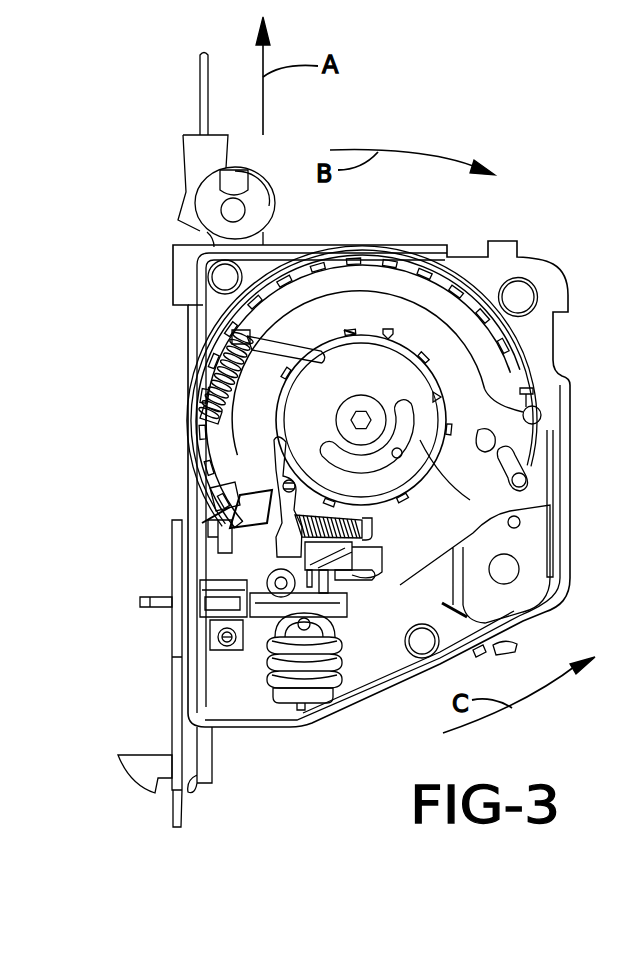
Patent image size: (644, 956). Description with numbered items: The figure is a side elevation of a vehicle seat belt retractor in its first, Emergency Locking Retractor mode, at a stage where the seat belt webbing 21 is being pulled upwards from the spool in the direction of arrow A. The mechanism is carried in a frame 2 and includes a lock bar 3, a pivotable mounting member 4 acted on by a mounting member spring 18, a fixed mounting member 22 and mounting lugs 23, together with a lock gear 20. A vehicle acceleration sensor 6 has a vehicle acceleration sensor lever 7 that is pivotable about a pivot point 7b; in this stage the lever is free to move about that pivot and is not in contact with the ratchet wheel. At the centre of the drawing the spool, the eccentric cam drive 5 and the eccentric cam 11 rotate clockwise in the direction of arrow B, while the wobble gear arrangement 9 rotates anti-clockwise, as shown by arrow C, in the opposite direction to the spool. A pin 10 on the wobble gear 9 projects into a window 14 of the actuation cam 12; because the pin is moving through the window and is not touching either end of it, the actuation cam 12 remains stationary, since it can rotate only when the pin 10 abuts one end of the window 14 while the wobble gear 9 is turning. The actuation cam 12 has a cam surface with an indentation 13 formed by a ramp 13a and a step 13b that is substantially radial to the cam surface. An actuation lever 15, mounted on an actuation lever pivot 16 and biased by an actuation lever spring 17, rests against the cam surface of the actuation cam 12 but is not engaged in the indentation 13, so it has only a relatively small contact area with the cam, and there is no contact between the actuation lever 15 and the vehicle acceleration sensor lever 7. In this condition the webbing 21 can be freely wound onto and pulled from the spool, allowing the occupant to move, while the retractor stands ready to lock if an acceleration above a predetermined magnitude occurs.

The frame 2 is at (538, 277).
The lock bar 3 is at (527, 580).
The pivotable mounting member 4 is at (467, 315).
The eccentric cam drive 5 is at (363, 415).
The vehicle acceleration sensor 6 is at (315, 665).
The vehicle acceleration sensor lever 7 is at (313, 590).
The pivot point 7b is at (268, 573).
The wobble gear arrangement 9 is at (407, 430).
The pin 10 is at (400, 453).
The eccentric cam 11 is at (381, 408).
The actuation cam 12 is at (433, 382).
The indentation 13 is at (285, 354).
The ramp 13a is at (258, 362).
The step 13b is at (295, 340).
The window 14 is at (420, 418).
The actuation lever 15 is at (267, 438).
The actuation lever pivot 16 is at (283, 483).
The actuation lever spring 17 is at (317, 537).
The mounting member spring 18 is at (228, 378).
The lock gear 20 is at (317, 543).
The seat belt webbing 21 is at (207, 77).
The fixed mounting member 22 is at (510, 357).
The mounting lugs 23 is at (348, 333).